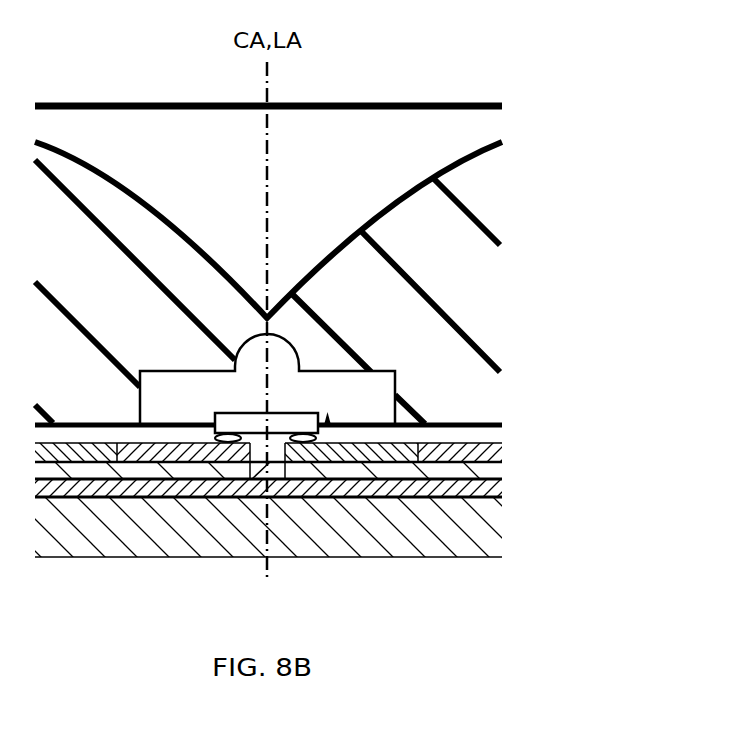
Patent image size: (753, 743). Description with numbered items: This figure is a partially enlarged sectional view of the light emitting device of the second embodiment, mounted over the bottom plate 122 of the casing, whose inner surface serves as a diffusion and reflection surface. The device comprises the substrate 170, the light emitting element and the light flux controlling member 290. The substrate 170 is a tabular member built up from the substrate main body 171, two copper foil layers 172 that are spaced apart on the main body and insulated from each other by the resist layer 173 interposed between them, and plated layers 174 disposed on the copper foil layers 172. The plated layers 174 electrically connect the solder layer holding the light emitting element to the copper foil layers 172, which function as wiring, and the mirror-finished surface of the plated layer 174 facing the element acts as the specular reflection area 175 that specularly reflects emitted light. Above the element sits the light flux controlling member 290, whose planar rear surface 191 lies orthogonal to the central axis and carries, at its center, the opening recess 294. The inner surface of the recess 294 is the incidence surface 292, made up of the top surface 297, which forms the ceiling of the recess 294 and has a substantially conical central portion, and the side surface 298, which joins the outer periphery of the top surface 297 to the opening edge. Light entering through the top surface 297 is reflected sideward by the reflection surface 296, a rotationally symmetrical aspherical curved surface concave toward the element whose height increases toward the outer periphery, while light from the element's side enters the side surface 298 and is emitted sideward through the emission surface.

The bottom plate 122 is at (495, 523).
The substrate 170 is at (349, 434).
The substrate main body 171 is at (312, 503).
The copper foil layer 172 is at (495, 467).
The resist layer 173 is at (495, 453).
The plated layer 174 is at (418, 447).
The specular reflection area 175 is at (380, 425).
The rear surface 191 is at (82, 425).
The light flux controlling member 290 is at (488, 193).
The incidence surface 292 is at (422, 537).
The recess 294 is at (322, 372).
The reflection surface 296 is at (145, 203).
The top surface 297 is at (374, 437).
The side surface 298 is at (388, 437).